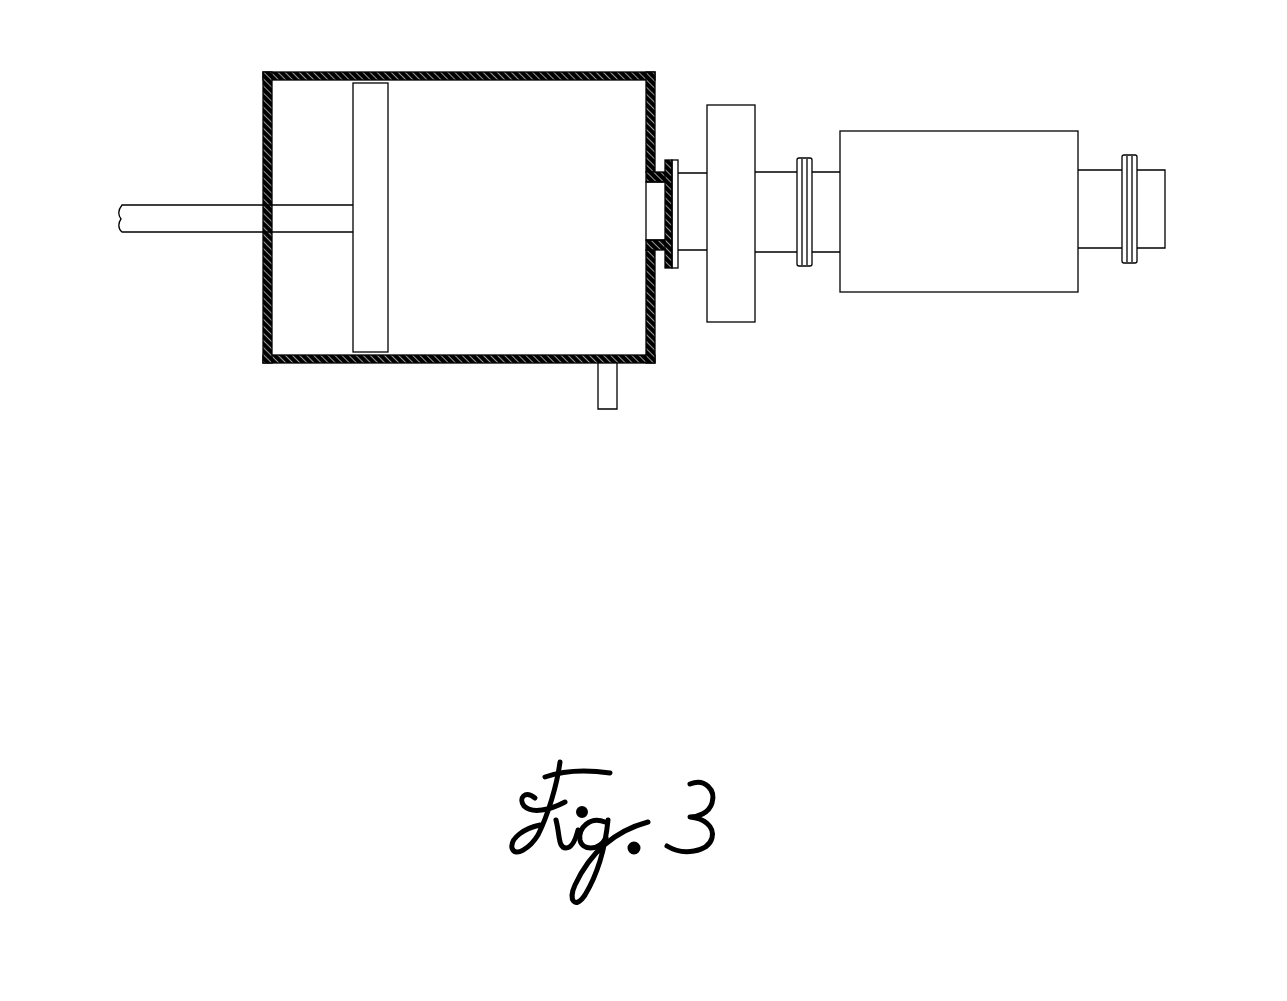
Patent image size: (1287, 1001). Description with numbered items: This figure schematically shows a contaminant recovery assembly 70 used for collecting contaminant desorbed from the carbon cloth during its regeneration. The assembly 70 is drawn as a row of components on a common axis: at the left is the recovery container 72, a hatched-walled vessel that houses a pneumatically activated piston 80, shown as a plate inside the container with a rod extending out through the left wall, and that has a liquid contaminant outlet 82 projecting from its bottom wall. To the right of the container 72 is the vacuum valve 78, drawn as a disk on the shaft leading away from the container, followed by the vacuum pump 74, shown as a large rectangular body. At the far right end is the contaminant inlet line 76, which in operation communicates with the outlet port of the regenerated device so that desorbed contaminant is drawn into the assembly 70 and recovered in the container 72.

The contaminant recovery assembly 70 is at (696, 374).
The recovery container 72 is at (472, 72).
The vacuum pump 74 is at (1080, 275).
The contaminant inlet line 76 is at (1150, 166).
The vacuum valve 78 is at (730, 322).
The pneumatically activated piston 80 is at (372, 163).
The liquid contaminant outlet 82 is at (607, 385).